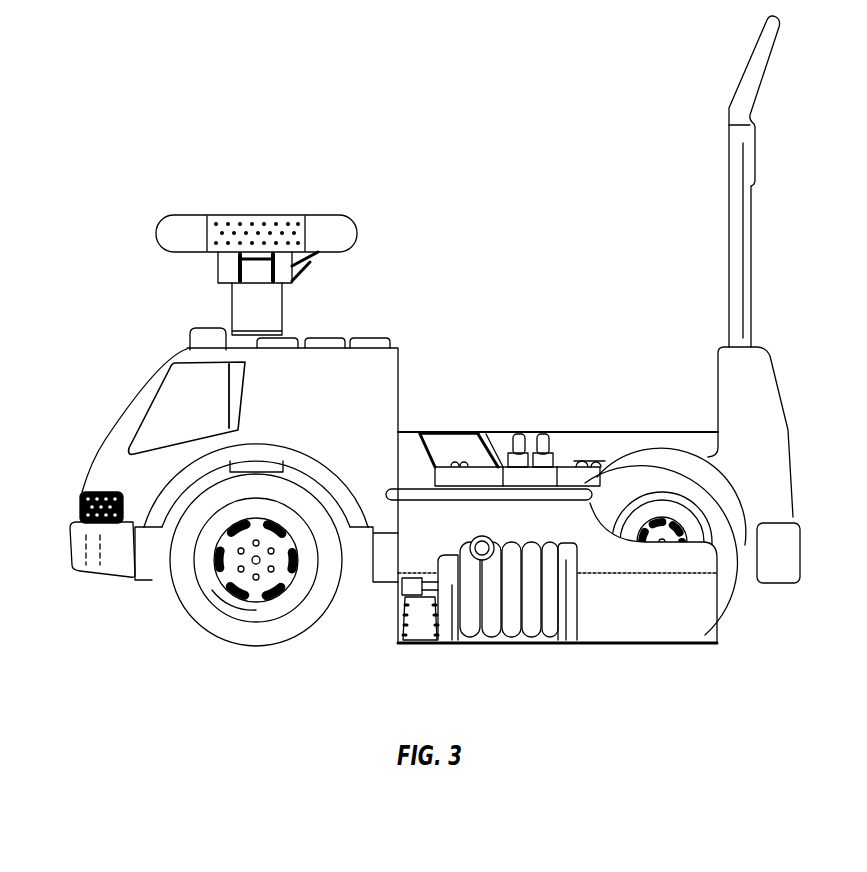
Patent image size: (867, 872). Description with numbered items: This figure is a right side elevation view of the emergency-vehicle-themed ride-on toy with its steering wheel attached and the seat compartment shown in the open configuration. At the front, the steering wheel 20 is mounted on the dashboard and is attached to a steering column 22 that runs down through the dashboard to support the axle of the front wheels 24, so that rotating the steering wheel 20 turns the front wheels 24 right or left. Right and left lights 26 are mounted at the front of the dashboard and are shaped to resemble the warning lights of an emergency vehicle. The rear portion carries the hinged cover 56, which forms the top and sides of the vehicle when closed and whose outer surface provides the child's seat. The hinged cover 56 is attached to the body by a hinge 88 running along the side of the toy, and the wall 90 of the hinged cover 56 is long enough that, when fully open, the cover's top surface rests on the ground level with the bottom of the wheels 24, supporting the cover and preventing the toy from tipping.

The steering wheel 20 is at (177, 223).
The steering column 22 is at (233, 307).
The front wheels 24 is at (283, 635).
The lights 26 is at (80, 510).
The hinged cover 56 is at (700, 630).
The hinge 88 is at (550, 492).
The wall 90 is at (415, 495).